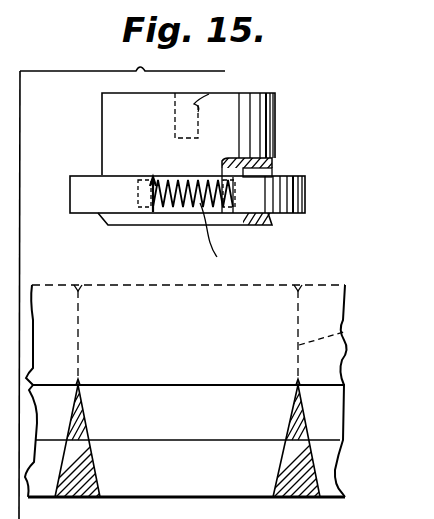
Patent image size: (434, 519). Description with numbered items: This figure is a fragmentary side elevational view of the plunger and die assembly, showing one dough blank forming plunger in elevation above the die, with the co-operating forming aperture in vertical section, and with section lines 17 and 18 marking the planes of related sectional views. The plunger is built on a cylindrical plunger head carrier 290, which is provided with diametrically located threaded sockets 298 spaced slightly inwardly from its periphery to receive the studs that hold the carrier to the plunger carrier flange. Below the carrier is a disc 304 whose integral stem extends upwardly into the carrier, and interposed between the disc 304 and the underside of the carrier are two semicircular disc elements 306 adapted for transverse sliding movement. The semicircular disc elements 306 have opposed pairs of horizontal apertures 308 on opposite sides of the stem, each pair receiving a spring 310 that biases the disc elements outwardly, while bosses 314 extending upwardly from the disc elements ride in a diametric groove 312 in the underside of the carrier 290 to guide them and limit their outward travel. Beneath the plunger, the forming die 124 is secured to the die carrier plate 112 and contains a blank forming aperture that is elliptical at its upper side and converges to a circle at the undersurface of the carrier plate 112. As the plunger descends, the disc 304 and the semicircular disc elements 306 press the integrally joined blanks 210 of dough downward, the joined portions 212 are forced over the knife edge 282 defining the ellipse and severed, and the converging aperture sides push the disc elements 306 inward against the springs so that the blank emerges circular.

The section line 17- 17 is at (30, 76).
The section line 18- 18 is at (187, 74).
The die carrier plate 112 is at (297, 498).
The forming die 124 is at (83, 432).
The integrally joined blanks 210 is at (201, 343).
The joined portions 212 is at (350, 332).
The knife edge 282 is at (81, 385).
The plunger head carrier 290 is at (268, 113).
The threaded sockets 298 is at (209, 94).
The disc 304 is at (252, 220).
The semicircular disc elements 306 is at (80, 197).
The horizontal apertures 308 is at (140, 215).
The spring 310 is at (220, 239).
The diametric groove 312 is at (228, 165).
The bosses 314 is at (258, 172).